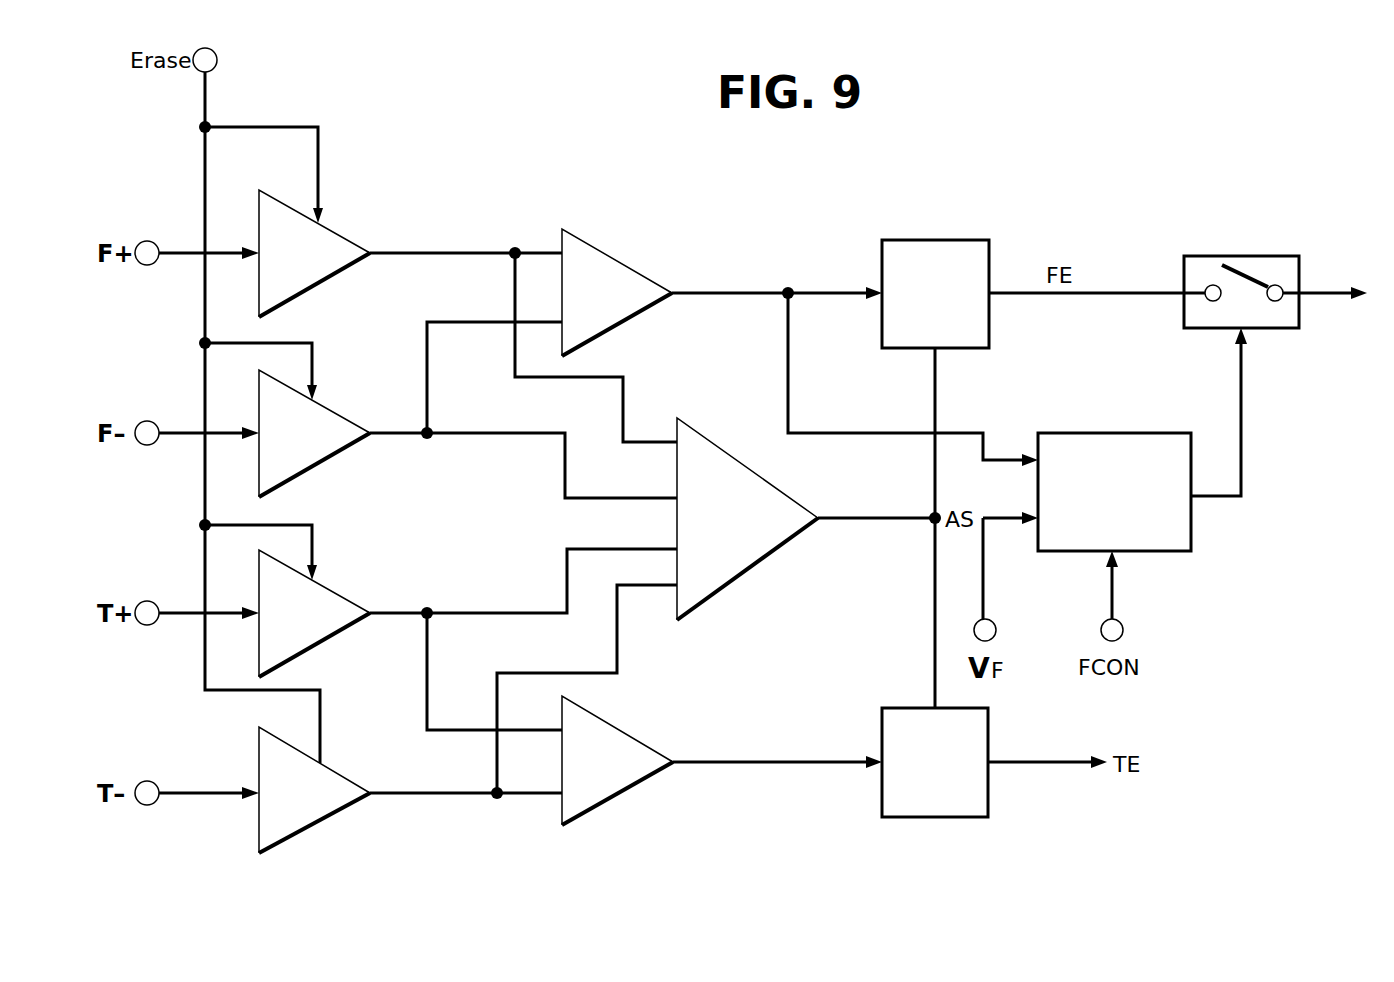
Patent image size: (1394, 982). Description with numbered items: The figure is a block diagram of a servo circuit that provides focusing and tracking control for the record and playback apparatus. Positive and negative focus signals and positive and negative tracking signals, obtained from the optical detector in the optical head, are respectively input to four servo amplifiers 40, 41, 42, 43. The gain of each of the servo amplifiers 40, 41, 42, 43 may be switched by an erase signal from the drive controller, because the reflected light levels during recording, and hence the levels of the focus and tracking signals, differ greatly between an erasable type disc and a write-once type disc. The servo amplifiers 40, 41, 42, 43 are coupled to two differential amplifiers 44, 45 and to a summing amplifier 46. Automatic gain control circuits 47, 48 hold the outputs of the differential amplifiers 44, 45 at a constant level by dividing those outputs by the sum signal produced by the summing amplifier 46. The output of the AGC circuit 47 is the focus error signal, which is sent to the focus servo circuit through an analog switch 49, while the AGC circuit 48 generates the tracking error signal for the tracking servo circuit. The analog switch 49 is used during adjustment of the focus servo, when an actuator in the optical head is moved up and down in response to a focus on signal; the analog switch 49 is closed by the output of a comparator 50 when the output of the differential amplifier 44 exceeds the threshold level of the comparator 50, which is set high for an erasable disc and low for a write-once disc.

The servo amplifier 40 is at (340, 245).
The servo amplifier 41 is at (333, 425).
The servo amplifier 42 is at (333, 605).
The servo amplifier 43 is at (333, 785).
The differential amplifier 44 is at (616, 272).
The differential amplifier 45 is at (615, 740).
The summing amplifier 46 is at (760, 548).
The automatic gain control circuit 47 is at (915, 247).
The automatic gain control circuit 48 is at (932, 808).
The analog switch 49 is at (1272, 268).
The comparator 50 is at (1133, 443).